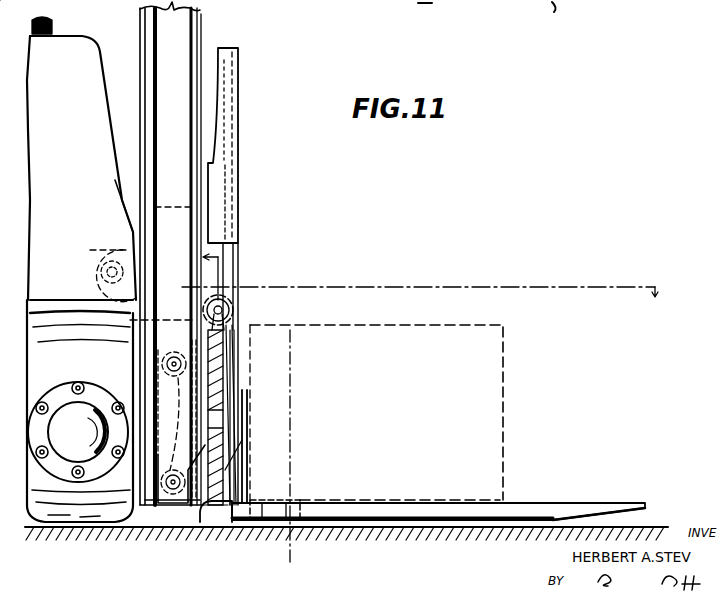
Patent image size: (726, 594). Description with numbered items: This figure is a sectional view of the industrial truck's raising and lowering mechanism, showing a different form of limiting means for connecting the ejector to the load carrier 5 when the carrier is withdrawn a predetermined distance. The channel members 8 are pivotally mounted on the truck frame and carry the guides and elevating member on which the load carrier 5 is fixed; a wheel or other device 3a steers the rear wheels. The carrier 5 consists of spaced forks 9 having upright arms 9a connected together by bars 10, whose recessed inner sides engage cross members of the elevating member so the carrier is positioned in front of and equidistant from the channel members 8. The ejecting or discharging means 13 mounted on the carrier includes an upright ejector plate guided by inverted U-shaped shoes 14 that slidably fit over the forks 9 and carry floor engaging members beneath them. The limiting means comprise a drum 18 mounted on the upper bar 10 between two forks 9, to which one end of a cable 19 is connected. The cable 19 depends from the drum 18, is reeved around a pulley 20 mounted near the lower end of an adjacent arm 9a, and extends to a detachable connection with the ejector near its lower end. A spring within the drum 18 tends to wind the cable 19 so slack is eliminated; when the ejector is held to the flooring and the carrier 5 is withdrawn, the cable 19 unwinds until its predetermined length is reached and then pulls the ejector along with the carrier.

The channel members 8 is at (202, 20).
The upright arms 9a is at (232, 266).
The drum 18 is at (236, 313).
The ejecting or discharging means 13 is at (282, 563).
The bars 10 is at (122, 327).
The cable 19 is at (247, 378).
The wheel or other device 3a is at (243, 462).
The pulley 20 is at (214, 503).
The shoes 14 is at (286, 500).
The forks 9 is at (420, 506).
The load carrier 5 is at (548, 503).